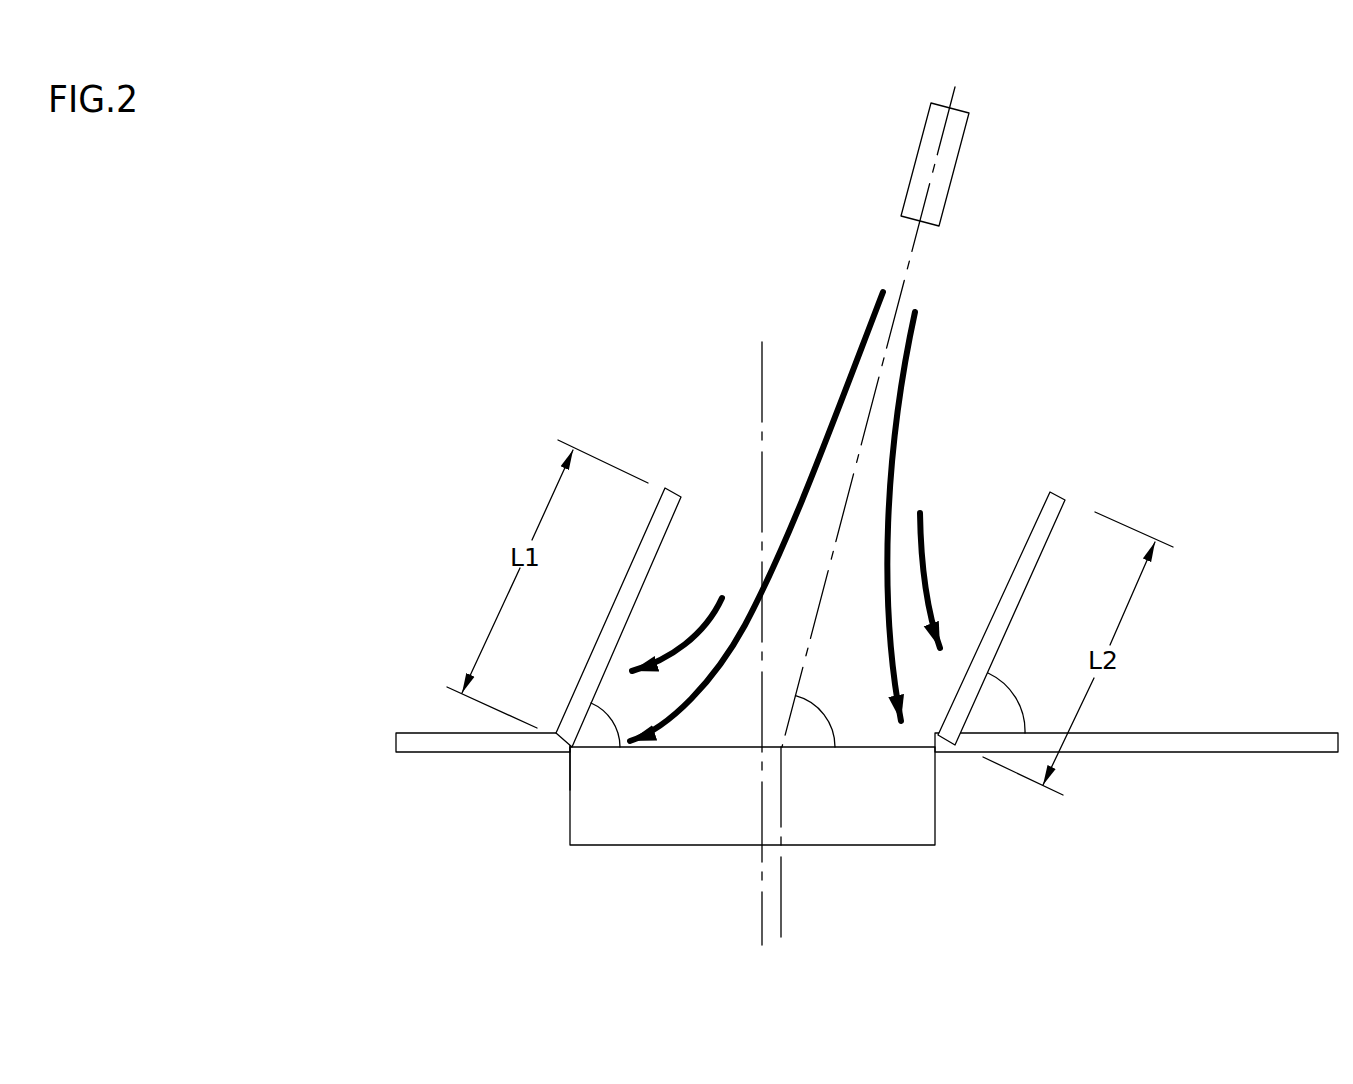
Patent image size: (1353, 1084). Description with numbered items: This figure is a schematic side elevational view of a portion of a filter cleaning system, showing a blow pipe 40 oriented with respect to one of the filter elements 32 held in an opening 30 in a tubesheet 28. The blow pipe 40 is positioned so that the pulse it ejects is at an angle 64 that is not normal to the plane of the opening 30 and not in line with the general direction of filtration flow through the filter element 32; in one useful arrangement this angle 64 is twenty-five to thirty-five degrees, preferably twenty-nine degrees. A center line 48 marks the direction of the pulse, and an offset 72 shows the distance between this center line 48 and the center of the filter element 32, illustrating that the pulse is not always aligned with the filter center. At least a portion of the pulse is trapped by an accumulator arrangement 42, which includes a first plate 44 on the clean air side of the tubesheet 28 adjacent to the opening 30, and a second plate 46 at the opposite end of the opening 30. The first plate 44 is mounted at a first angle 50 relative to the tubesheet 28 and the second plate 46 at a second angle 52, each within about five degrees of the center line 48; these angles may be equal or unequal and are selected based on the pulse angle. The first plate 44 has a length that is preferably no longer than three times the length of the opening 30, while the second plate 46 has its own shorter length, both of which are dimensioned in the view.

The tubesheet 28 is at (430, 732).
The opening 30 is at (570, 752).
The filter element 32 is at (918, 825).
The blow pipe 40 is at (955, 173).
The accumulator arrangement 42 is at (666, 448).
The first plate 44 is at (630, 567).
The second plate 46 is at (1052, 537).
The center line 48 is at (850, 488).
The first angle 50 is at (600, 705).
The second angle 52 is at (1005, 685).
The angle 64 is at (818, 700).
The offset 72 is at (687, 918).